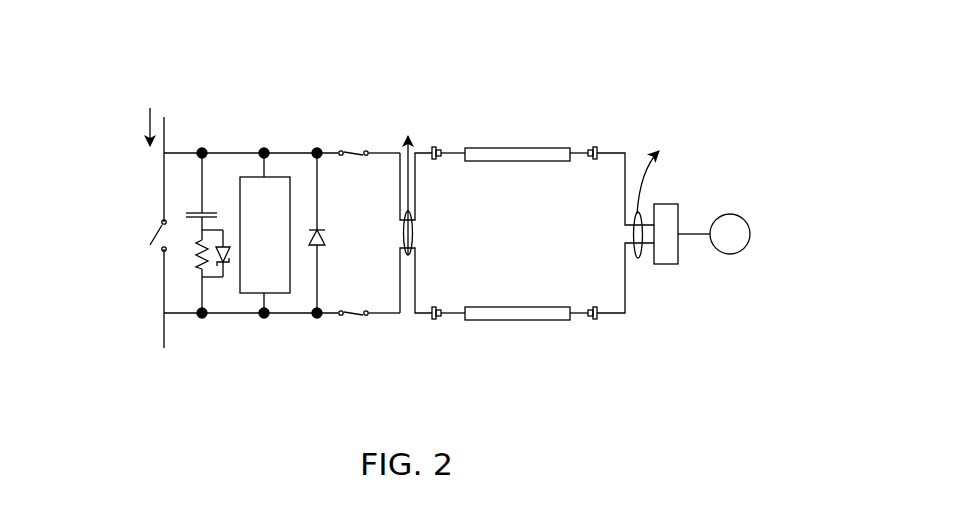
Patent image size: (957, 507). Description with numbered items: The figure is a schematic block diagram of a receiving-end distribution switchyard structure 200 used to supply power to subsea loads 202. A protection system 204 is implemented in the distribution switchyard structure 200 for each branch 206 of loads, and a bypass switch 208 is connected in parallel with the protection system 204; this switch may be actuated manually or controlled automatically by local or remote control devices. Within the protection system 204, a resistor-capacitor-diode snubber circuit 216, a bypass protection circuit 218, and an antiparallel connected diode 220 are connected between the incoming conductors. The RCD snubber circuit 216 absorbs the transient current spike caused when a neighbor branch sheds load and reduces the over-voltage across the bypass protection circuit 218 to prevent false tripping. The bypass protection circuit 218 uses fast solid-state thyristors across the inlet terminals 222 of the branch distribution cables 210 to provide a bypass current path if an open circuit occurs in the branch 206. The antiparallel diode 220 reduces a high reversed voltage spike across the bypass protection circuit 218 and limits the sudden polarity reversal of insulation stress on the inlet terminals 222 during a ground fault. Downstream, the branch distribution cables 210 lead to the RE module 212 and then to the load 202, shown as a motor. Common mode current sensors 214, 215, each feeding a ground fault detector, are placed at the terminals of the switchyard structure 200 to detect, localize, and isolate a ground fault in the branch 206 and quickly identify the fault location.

The receiving-end distribution switchyard structure 200 is at (466, 53).
The subsea load 202 is at (731, 255).
The protection system 204 is at (283, 128).
The branch 206 is at (77, 231).
The bypass switch 208 is at (158, 230).
The branch distribution cable 210 is at (530, 163).
The RE module 212 is at (666, 265).
The common mode current sensor 214 is at (413, 233).
The common mode current sensor 215 is at (633, 235).
The resistor-capacitor-diode (RCD) snubber circuit 216 is at (203, 320).
The bypass protection circuit 218 is at (265, 320).
The antiparallel connected diode 220 is at (318, 320).
The inlet terminal 222 is at (436, 162).